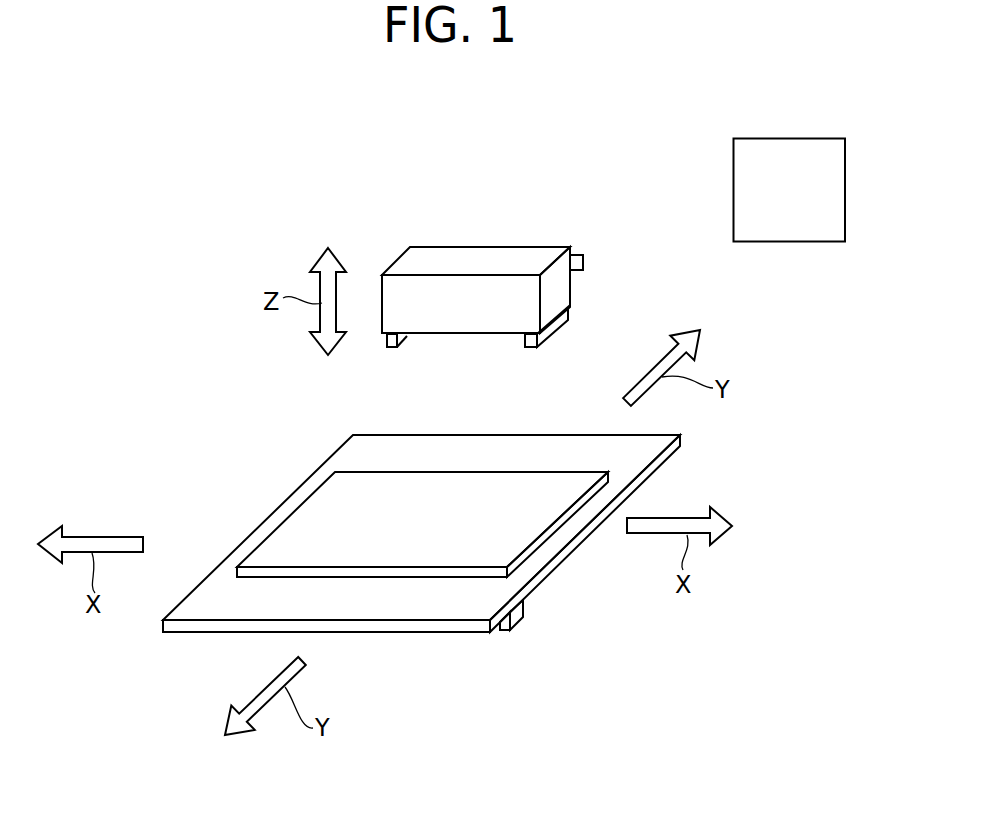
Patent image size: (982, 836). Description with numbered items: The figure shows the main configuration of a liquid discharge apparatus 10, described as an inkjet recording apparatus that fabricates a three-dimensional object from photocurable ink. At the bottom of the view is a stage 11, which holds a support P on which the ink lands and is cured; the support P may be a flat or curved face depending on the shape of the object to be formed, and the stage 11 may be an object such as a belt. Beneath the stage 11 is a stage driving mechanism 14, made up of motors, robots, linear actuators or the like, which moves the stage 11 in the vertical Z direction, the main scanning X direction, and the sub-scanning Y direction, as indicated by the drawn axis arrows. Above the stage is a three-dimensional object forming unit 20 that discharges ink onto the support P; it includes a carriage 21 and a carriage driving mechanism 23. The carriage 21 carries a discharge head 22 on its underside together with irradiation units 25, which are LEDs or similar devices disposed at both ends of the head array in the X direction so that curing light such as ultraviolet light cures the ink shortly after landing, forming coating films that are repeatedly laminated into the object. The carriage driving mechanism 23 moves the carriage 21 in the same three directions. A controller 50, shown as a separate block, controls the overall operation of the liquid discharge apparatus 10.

The liquid discharge apparatus 10 is at (891, 54).
The stage 11 is at (447, 605).
The stage driving mechanism 14 is at (518, 612).
The three-dimensional object forming unit 20 is at (519, 270).
The carriage 21 is at (517, 247).
The discharge head 22 is at (461, 345).
The carriage driving mechanism 23 is at (583, 262).
The irradiation unit 25 is at (393, 347).
The controller 50 is at (785, 138).
The support P is at (513, 525).